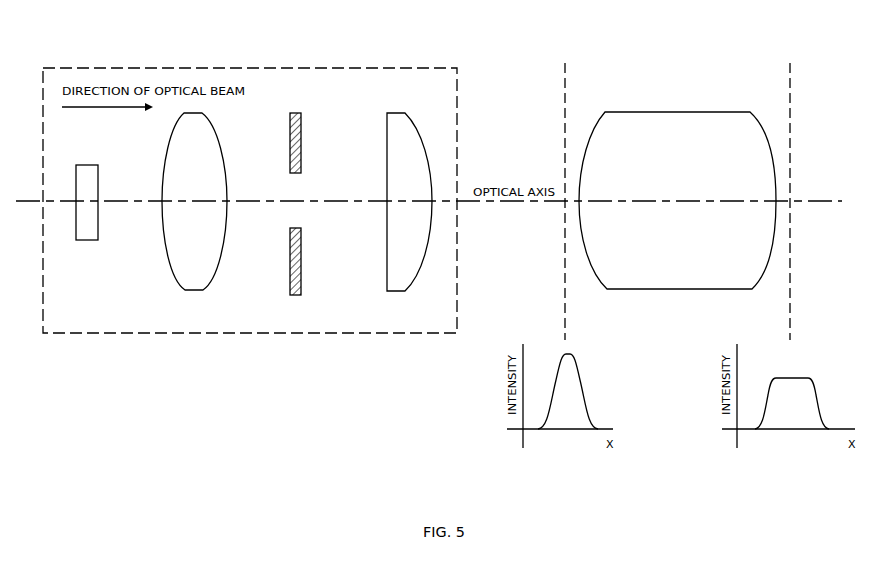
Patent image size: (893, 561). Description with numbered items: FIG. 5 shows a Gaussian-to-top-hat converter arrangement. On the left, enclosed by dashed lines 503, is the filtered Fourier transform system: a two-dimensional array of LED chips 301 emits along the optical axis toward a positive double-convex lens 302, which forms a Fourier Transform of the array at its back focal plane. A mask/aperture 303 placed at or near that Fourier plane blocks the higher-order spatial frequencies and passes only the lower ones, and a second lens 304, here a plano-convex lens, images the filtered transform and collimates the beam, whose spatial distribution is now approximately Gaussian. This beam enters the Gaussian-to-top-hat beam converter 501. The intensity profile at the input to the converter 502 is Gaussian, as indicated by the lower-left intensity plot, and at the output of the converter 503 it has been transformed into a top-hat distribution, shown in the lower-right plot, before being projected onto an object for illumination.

The array of LED chips 301 is at (106, 225).
The positive double-convex lens 302 is at (200, 218).
The mask/aperture 303 is at (314, 188).
The second lens 304 is at (412, 186).
The Gaussian-to-top-hat beam converter 501 is at (677, 191).
The input to the converter 502 is at (562, 191).
The output of the converter 503 is at (421, 184).